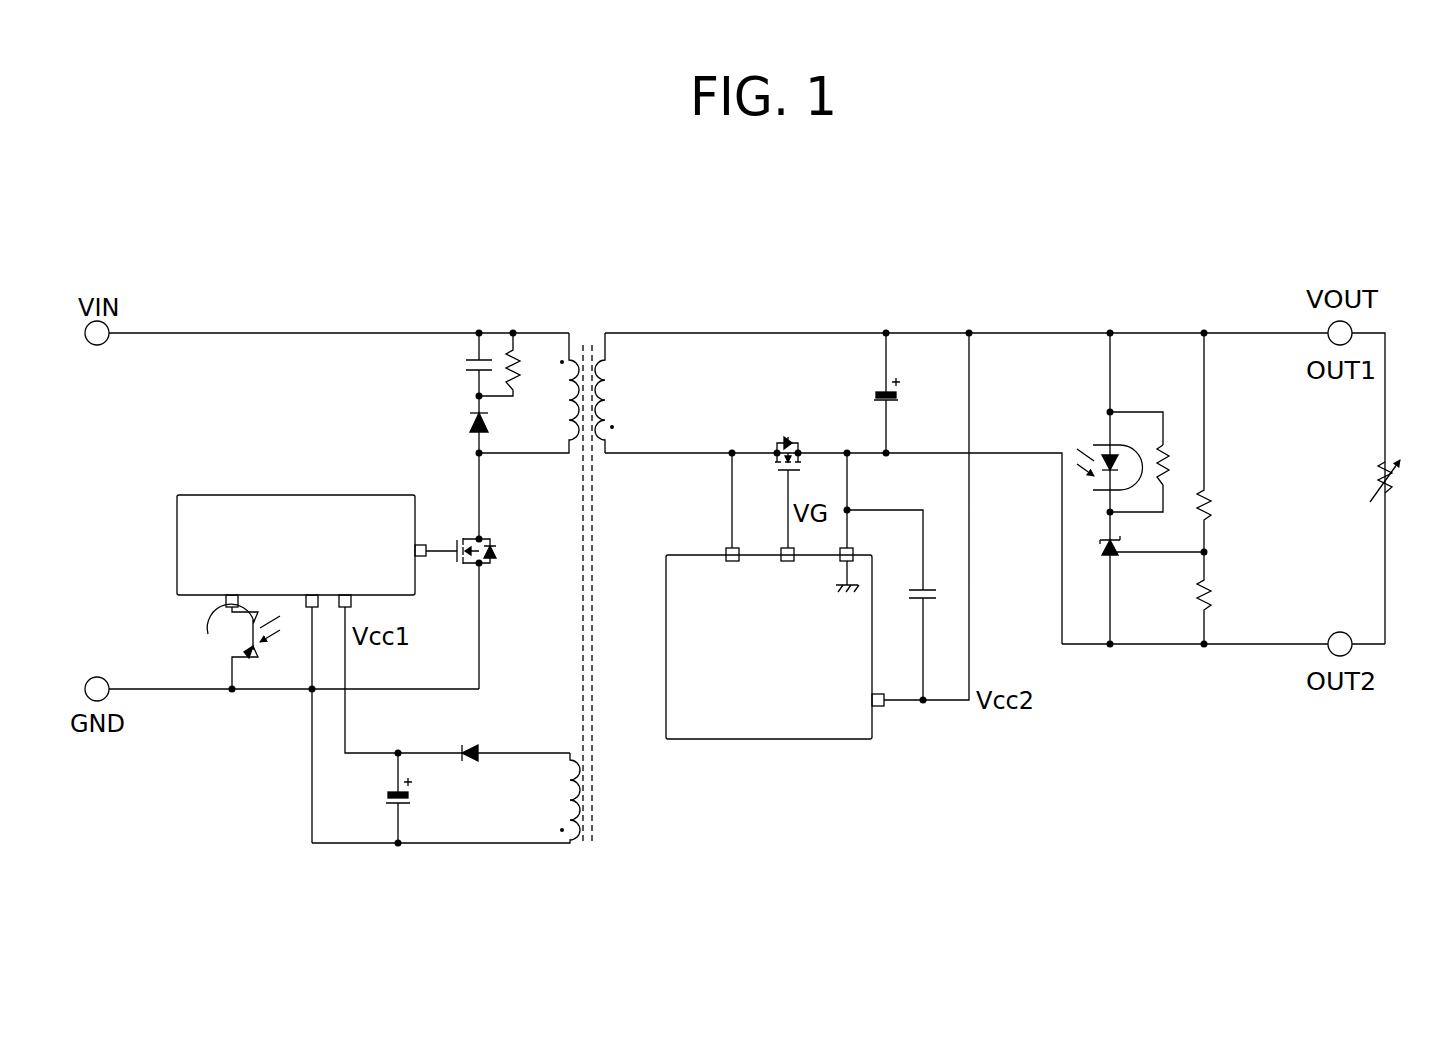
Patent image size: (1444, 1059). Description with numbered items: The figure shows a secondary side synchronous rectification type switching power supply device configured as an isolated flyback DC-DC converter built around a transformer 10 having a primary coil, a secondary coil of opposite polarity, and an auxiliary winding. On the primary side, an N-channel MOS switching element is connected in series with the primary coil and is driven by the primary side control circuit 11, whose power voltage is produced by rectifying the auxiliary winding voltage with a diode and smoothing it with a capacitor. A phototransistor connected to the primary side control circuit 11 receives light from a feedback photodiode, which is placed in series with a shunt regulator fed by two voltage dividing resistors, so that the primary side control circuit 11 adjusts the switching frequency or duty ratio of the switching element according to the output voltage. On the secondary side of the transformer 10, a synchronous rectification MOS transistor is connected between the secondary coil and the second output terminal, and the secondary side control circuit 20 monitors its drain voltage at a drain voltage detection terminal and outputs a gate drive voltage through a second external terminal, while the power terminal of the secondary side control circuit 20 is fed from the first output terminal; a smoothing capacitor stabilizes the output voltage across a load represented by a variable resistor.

The transformer 10 is at (601, 315).
The primary side control circuit 11 is at (341, 494).
The secondary side control circuit 20 is at (703, 740).